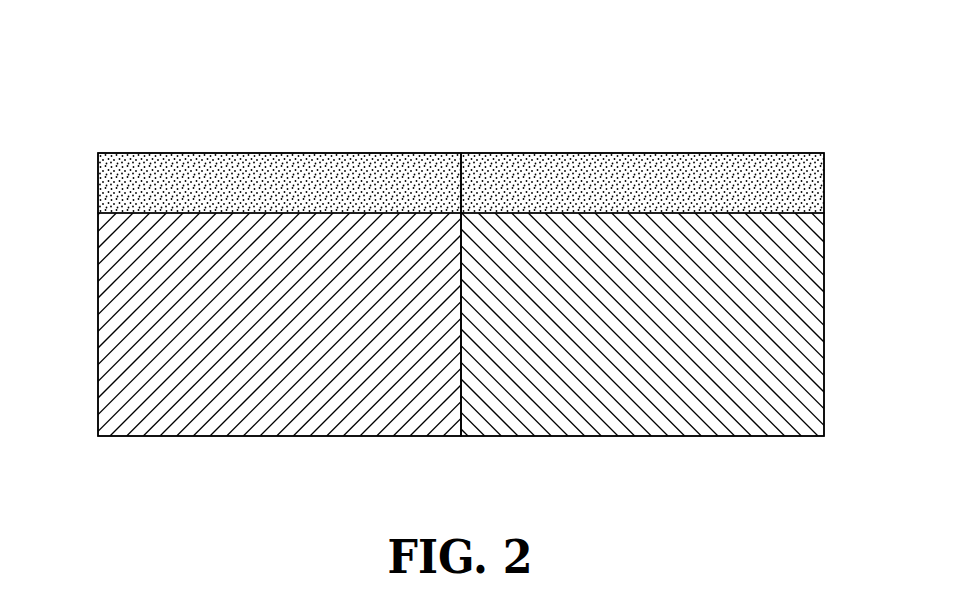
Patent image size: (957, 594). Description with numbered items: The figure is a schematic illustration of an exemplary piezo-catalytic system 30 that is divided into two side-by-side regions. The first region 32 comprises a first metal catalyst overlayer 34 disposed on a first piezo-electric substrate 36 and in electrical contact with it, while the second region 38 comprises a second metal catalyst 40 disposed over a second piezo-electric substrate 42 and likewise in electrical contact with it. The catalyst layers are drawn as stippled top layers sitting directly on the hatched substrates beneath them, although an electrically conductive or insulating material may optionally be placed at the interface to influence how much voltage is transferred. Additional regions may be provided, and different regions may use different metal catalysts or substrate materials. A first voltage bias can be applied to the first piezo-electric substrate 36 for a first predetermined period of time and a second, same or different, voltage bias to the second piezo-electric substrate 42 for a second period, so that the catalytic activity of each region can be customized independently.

The piezo-catalytic system 30 is at (478, 260).
The first region 32 is at (341, 310).
The first metal catalyst overlayer 34 is at (98, 185).
The first piezo-electric substrate 36 is at (98, 348).
The second region 38 is at (601, 310).
The second metal catalyst 40 is at (824, 185).
The second piezo-electric substrate 42 is at (824, 347).